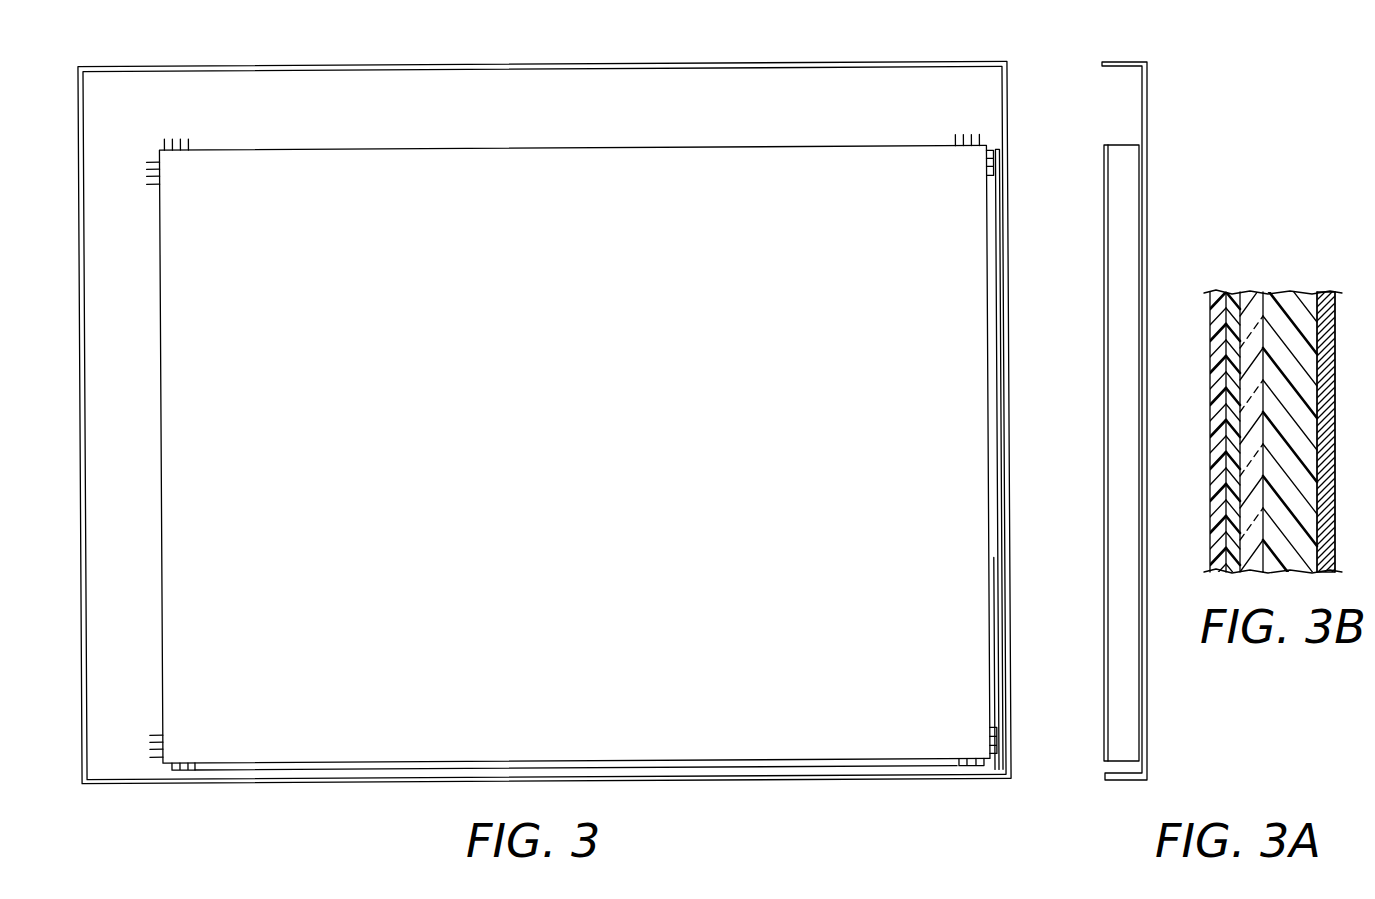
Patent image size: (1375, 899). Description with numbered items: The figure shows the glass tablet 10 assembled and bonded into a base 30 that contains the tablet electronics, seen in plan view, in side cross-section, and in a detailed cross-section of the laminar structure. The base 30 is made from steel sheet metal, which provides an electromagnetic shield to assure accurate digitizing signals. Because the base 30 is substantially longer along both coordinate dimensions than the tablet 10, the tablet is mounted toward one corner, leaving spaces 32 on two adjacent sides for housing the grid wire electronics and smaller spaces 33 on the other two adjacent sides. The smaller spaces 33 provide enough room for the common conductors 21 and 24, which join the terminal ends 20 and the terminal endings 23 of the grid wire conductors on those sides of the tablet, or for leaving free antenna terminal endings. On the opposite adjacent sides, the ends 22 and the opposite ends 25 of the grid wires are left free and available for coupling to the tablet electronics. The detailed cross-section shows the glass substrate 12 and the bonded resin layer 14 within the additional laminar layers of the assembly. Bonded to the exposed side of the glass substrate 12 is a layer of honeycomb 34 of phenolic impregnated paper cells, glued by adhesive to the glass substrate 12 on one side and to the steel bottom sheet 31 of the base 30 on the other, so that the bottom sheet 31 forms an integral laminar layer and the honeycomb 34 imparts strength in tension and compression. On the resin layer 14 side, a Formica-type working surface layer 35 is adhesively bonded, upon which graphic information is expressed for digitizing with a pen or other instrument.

In FIG. 3, the glass tablet 10 is at (574, 454).
In FIG. 3A, the glass tablet 10 is at (1096, 290).
In FIG. 3B, the glass substrate 12 is at (1250, 291).
In FIG. 3B, the bonded resin layer 14 is at (1232, 291).
In FIG. 3, the terminal ends 20 is at (190, 770).
In FIG. 3, the common lead wire 21 is at (241, 770).
In FIG. 3, the free ends 22 is at (182, 135).
In FIG. 3, the terminal endings 23 is at (998, 156).
In FIG. 3, the common leadwire 24 is at (1000, 190).
In FIG. 3, the opposite ends 25 is at (146, 170).
In FIG. 3, the base 30 is at (845, 63).
In FIG. 3A, the base 30 is at (1136, 58).
In FIG. 3A, the bottom sheet 31 is at (1148, 184).
In FIG. 3B, the bottom sheet 31 is at (1330, 291).
In FIG. 3, the spaces 32 is at (543, 263).
In FIG. 3A, the spaces 32 is at (1123, 118).
In FIG. 3, the smaller spaces 33 is at (1008, 572).
In FIG. 3A, the smaller spaces 33 is at (1092, 772).
In FIG. 3B, the honeycomb layer 34 is at (1296, 291).
In FIG. 3B, the working surface layer 35 is at (1217, 291).